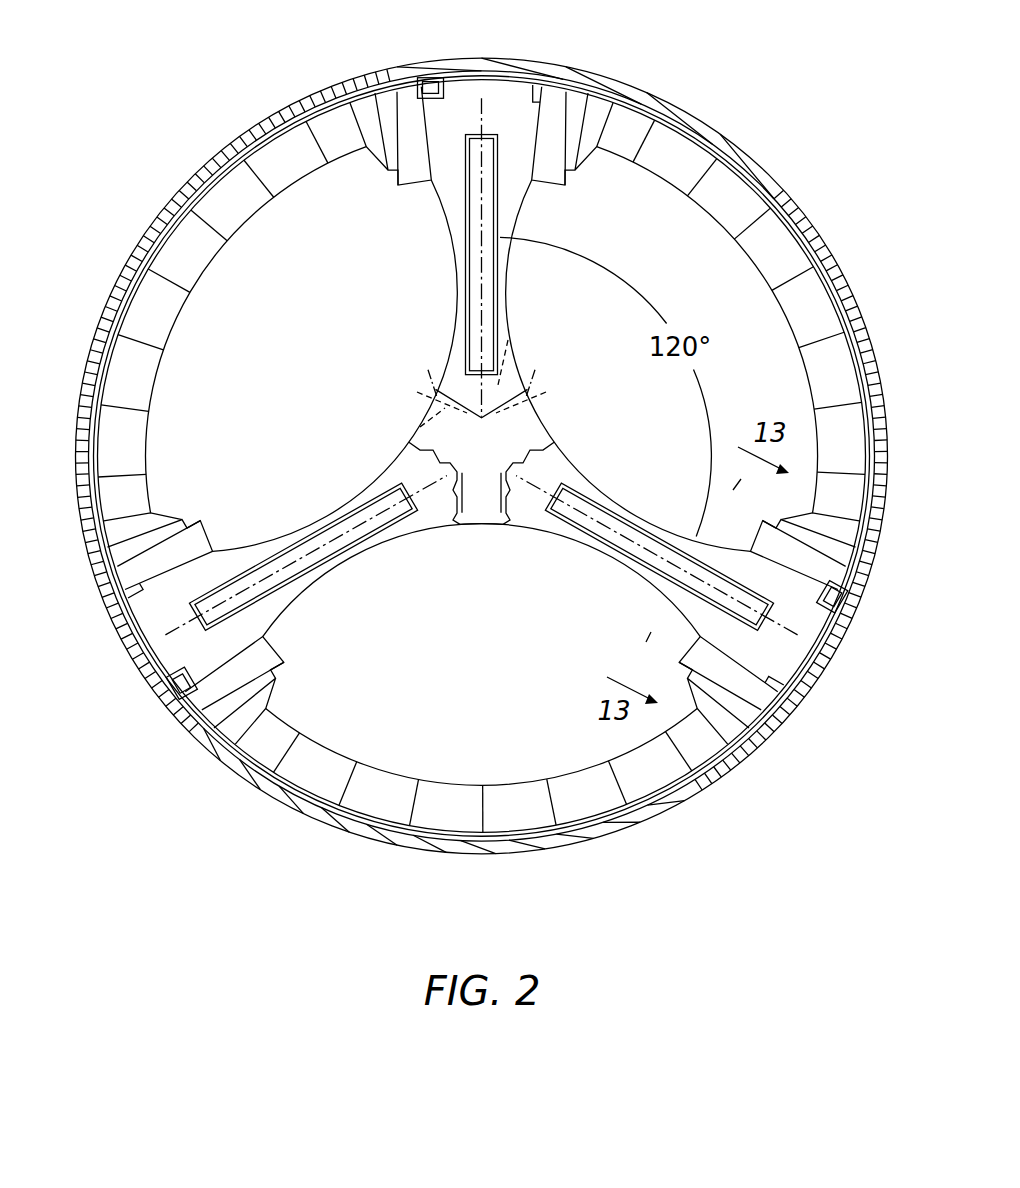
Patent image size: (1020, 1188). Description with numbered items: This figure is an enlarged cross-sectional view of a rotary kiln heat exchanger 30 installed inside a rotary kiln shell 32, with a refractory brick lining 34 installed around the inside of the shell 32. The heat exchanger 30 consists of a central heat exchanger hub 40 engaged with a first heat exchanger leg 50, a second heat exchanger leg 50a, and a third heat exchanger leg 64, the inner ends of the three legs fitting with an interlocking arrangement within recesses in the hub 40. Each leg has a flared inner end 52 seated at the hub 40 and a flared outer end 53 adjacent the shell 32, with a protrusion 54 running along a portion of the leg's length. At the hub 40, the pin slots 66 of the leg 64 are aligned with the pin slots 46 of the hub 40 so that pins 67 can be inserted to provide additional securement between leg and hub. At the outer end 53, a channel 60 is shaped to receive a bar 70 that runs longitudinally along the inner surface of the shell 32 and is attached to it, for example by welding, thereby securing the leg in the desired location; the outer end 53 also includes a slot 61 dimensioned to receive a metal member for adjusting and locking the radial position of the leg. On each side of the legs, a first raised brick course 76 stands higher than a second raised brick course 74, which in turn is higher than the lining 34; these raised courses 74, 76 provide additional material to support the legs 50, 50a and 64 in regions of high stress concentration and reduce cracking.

The rotary kiln heat exchanger 30 is at (737, 95).
The rotary kiln shell 32 is at (883, 430).
The refractory brick lining 34 is at (148, 357).
The heat exchanger hub 40 is at (540, 417).
The pin slots 46 is at (428, 396).
The first heat exchanger leg 50 is at (713, 540).
The second heat exchanger leg 50a is at (310, 595).
The flared inner end 52 is at (432, 528).
The flared outer end 53 is at (506, 95).
The protrusion 54 is at (490, 235).
The channel 60 is at (441, 82).
The slot 61 is at (541, 98).
The third heat exchanger leg 64 is at (442, 233).
The pin slots 66 is at (432, 383).
The pins 67 is at (508, 340).
The bar 70 is at (430, 78).
The second raised brick course 74 is at (168, 515).
The first raised brick course 76 is at (205, 537).